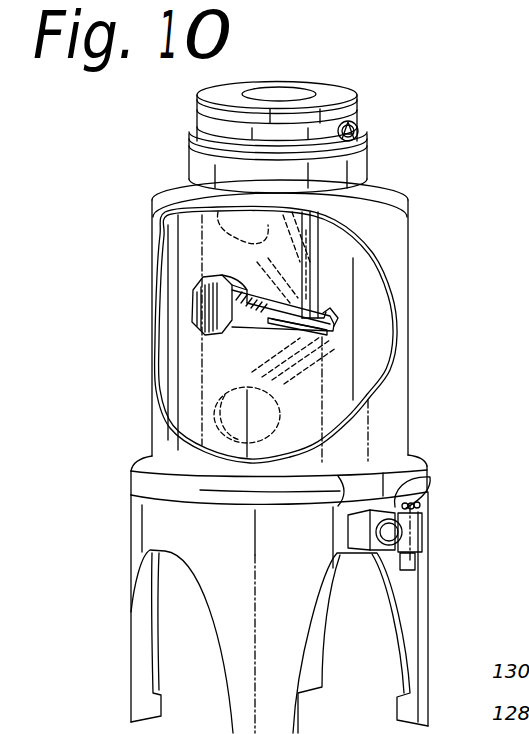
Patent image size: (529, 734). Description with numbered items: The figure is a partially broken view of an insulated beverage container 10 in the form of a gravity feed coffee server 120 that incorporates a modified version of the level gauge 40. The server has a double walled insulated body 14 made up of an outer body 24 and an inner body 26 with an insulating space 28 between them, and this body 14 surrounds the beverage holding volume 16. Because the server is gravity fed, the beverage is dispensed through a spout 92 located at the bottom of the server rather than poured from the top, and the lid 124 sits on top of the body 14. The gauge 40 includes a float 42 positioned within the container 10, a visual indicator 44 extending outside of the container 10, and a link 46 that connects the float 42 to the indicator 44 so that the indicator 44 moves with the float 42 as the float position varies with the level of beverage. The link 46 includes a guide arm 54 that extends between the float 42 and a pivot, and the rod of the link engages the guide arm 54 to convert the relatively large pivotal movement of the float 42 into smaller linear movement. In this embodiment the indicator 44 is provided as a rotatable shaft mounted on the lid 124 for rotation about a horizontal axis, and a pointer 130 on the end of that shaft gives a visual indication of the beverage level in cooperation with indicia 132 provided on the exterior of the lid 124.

The insulated beverage container 10 is at (398, 107).
The insulated body 14 is at (389, 397).
The beverage holding volume 16 is at (173, 335).
The outer body 24 is at (383, 263).
The inner body 26 is at (377, 288).
The insulating space 28 is at (397, 337).
The gauge 40 is at (342, 308).
The float 42 is at (200, 297).
The visual indicator 44 is at (382, 118).
The link 46 is at (320, 362).
The guide arm 54 is at (247, 333).
The spout 92 is at (423, 527).
The gravity feed coffee server 120 is at (175, 172).
The lid 124 is at (198, 127).
The pointer 130 is at (352, 120).
The indicia 132 is at (358, 121).